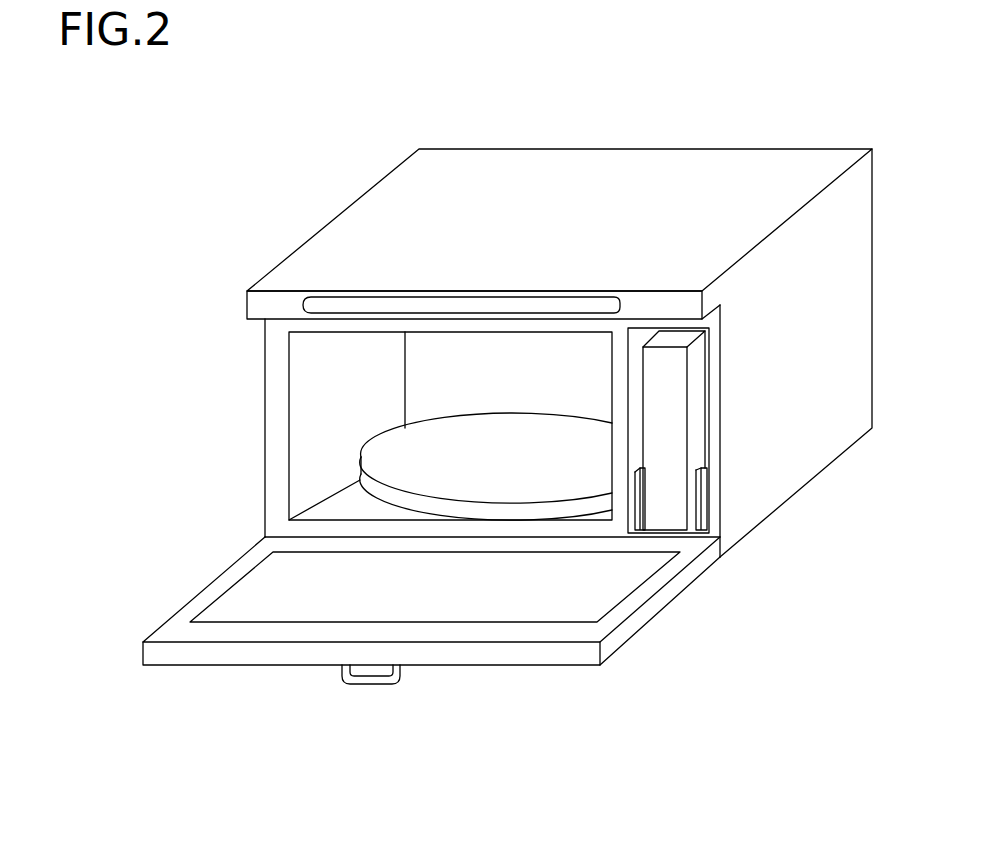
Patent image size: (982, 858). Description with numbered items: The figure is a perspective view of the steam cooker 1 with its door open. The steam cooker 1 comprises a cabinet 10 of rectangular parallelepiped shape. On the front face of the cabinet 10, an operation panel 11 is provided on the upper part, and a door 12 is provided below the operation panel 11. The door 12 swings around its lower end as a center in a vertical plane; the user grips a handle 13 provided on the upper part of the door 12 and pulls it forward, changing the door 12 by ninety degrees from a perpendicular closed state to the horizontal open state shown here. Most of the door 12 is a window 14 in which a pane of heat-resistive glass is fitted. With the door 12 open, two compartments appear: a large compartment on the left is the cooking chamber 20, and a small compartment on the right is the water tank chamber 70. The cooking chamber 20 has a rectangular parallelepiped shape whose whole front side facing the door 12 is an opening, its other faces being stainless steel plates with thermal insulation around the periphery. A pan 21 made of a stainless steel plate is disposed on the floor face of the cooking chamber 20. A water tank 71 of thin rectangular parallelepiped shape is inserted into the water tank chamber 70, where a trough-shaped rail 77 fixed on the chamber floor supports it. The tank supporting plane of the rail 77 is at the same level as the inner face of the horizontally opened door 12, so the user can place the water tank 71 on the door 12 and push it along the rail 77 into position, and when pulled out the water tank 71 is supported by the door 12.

The steam cooker 1 is at (334, 157).
The cabinet 10 is at (330, 238).
The operation panel 11 is at (322, 303).
The door 12 is at (240, 653).
The handle 13 is at (368, 683).
The window 14 is at (508, 607).
The cooking chamber 20 is at (312, 390).
The pan 21 is at (373, 483).
The water tank chamber 70 is at (634, 330).
The water tank 71 is at (665, 378).
The rail 77 is at (705, 487).